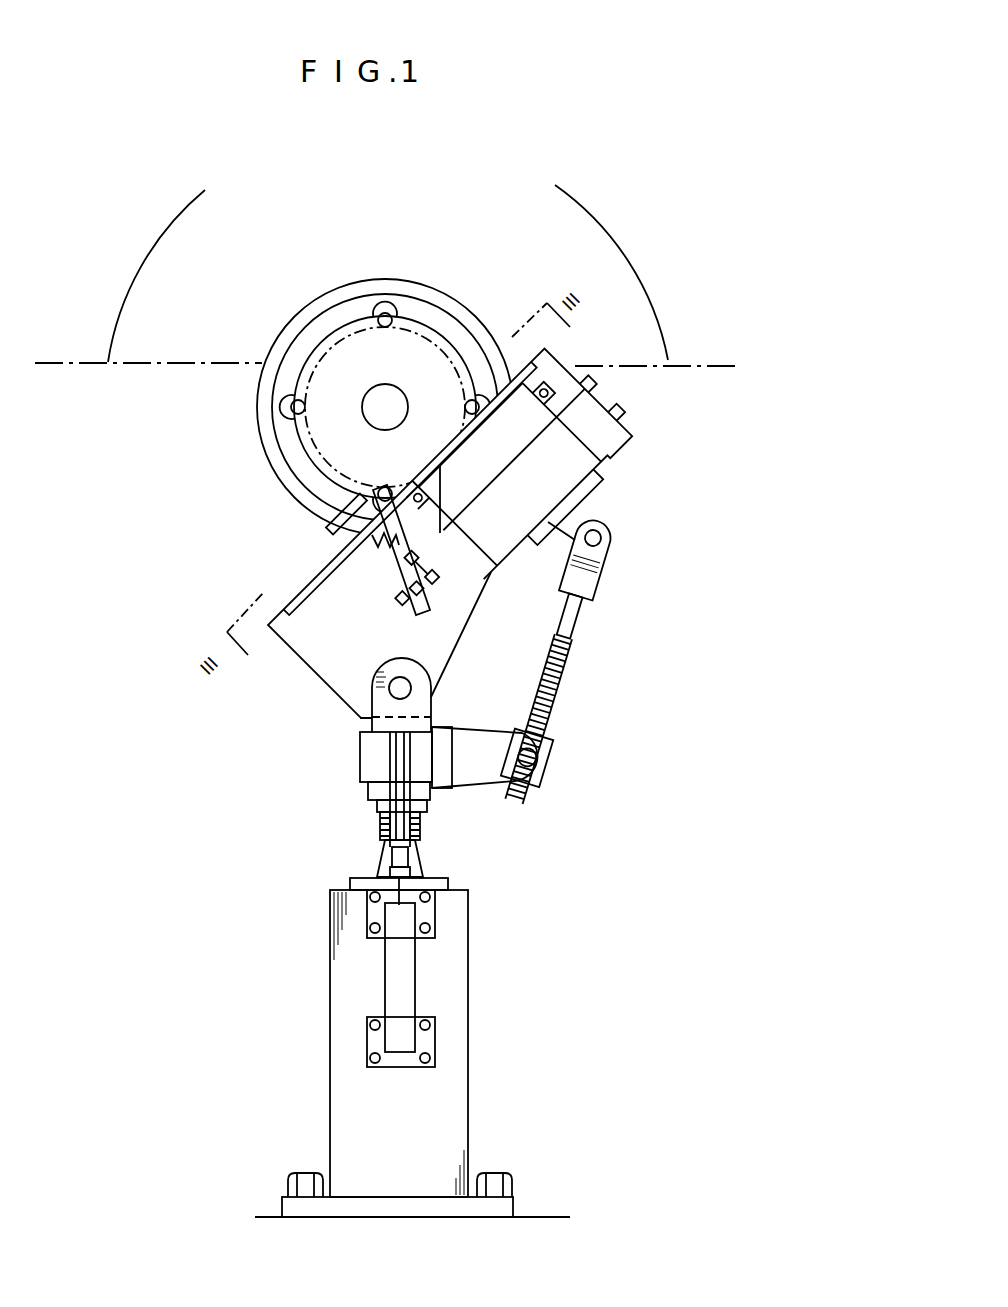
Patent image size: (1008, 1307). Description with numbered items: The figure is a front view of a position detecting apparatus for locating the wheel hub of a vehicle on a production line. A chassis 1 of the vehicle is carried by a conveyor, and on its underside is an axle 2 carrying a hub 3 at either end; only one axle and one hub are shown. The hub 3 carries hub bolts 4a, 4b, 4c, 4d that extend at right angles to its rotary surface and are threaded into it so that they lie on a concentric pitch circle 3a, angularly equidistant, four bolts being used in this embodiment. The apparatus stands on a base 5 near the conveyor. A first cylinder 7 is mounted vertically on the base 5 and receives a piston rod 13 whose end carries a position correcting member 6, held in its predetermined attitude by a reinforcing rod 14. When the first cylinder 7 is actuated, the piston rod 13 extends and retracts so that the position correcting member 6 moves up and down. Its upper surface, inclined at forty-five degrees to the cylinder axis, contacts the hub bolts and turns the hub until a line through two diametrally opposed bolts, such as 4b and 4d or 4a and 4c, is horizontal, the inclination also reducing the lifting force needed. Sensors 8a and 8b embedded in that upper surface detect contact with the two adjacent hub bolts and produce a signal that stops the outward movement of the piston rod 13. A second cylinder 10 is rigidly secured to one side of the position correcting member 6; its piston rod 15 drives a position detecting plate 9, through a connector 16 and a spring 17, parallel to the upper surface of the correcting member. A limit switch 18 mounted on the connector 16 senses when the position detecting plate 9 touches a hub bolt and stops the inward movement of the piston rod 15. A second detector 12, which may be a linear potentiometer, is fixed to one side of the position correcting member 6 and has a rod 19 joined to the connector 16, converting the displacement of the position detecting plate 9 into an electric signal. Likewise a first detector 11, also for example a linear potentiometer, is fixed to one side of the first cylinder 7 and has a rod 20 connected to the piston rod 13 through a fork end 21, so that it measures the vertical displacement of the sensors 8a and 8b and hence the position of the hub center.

The chassis 1 is at (722, 372).
The axle 2 is at (362, 413).
The hub 3 is at (262, 382).
The concentric pitch circle 3a is at (448, 340).
The hub bolt 4a is at (378, 493).
The hub bolt 4b is at (477, 398).
The hub bolt 4c is at (397, 314).
The hub bolt 4d is at (290, 407).
The base 5 is at (537, 1218).
The position correcting member 6 is at (603, 466).
The first cylinder 7 is at (470, 1073).
The sensor 8a is at (318, 567).
The sensor 8b is at (527, 360).
The position detecting plate 9 is at (340, 500).
The second cylinder 10 is at (603, 466).
The first detector 11 is at (417, 982).
The second detector 12 is at (527, 382).
The piston rod 13 is at (420, 858).
The reinforcing rod 14 is at (557, 697).
The piston rod 15 is at (422, 605).
The connector 16 is at (422, 623).
The spring 17 is at (380, 548).
The limit switch 18 is at (350, 511).
The rod 19 is at (462, 540).
The rod 20 is at (443, 883).
The fork end 21 is at (387, 797).